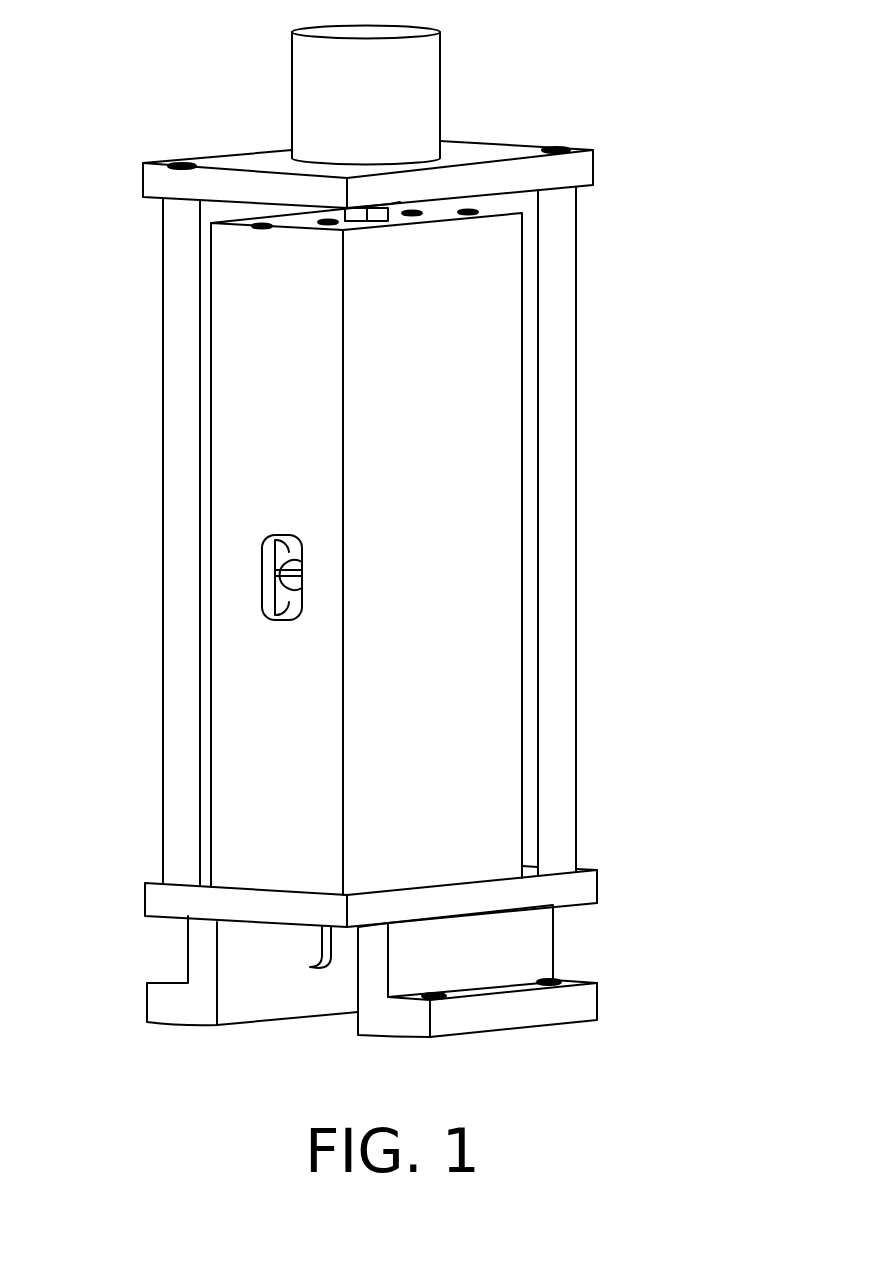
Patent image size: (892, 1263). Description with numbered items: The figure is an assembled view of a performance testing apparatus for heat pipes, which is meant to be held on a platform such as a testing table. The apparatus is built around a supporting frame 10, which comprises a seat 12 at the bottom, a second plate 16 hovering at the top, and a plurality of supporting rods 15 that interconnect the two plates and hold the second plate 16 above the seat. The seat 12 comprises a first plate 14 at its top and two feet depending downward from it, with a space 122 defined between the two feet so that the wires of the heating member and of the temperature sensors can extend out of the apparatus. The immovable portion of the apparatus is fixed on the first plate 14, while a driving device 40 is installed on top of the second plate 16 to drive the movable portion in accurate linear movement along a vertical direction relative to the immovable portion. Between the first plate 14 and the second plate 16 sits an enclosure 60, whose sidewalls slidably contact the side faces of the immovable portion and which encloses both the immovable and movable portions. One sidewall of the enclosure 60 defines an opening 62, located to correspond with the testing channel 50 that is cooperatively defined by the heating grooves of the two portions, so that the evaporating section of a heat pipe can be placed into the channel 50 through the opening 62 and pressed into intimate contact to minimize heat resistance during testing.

The supporting frame 10 is at (707, 135).
The seat 12 is at (570, 1012).
The space 122 is at (279, 1003).
The first plate 14 is at (575, 888).
The supporting rods 15 is at (555, 395).
The second plate 16 is at (565, 172).
The driving device 40 is at (405, 78).
The testing channel 50 is at (272, 592).
The enclosure 60 is at (262, 302).
The opening 62 is at (272, 610).